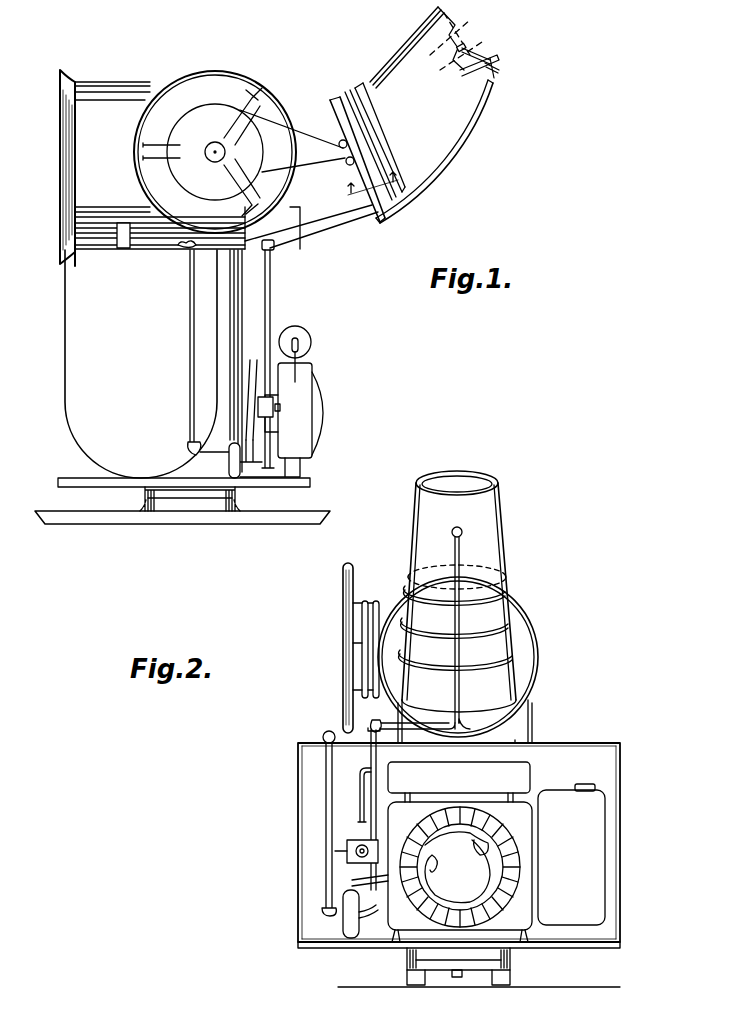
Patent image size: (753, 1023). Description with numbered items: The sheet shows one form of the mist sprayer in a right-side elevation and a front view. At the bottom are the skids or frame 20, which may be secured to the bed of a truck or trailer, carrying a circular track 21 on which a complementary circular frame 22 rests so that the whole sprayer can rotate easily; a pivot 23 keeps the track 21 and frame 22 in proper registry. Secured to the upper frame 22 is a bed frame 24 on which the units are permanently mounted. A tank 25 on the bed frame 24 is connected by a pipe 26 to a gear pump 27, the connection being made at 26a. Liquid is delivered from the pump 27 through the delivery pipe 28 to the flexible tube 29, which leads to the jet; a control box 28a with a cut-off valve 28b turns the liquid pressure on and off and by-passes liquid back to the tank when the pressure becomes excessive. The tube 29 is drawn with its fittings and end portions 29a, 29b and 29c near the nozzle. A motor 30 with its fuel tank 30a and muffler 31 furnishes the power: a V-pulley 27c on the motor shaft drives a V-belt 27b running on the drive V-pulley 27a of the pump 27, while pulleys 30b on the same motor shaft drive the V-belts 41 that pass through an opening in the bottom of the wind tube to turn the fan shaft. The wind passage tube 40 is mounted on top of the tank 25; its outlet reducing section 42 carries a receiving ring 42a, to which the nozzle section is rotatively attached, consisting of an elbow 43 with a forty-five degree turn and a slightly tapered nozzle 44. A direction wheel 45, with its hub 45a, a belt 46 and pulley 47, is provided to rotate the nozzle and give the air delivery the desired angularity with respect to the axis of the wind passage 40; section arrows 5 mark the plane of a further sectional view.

In FIG. 1, the skids or frame 20 is at (258, 514).
In FIG. 2, the skids or frame 20 is at (498, 986).
In FIG. 1, the circular track 21 is at (237, 498).
In FIG. 2, the circular track 21 is at (510, 964).
In FIG. 1, the complementary circular frame 22 is at (145, 493).
In FIG. 2, the complementary circular frame 22 is at (407, 958).
In FIG. 2, the pivot 23 is at (457, 978).
In FIG. 1, the bed frame 24 is at (58, 482).
In FIG. 1, the tank 25 is at (80, 406).
In FIG. 2, the tank 25 is at (606, 773).
In FIG. 2, the pipe 26 is at (325, 790).
In FIG. 2, the connection 26a is at (322, 910).
In FIG. 2, the gear pump 27 is at (343, 920).
In FIG. 1, the drive V-pulley 27a is at (245, 452).
In FIG. 2, the drive V-pulley 27a is at (352, 882).
In FIG. 1, the V-belt 27b is at (258, 430).
In FIG. 2, the V-belt 27b is at (362, 915).
In FIG. 1, the V-pulley 27c is at (248, 380).
In FIG. 1, the delivery pipe 28 is at (271, 300).
In FIG. 2, the delivery pipe 28 is at (378, 754).
In FIG. 1, the control box 28a is at (274, 405).
In FIG. 2, the control box 28a is at (378, 845).
In FIG. 1, the cut-off valve 28b is at (283, 408).
In FIG. 2, the cut-off valve 28b is at (360, 790).
In FIG. 1, the flexible tube 29 is at (452, 160).
In FIG. 2, the flexible tube 29 is at (460, 567).
In FIG. 1, the spring end 29a is at (497, 70).
In FIG. 2, the spring end 29a is at (452, 530).
In FIG. 1, the spring rod 29b is at (490, 60).
In FIG. 1, the spring anchor 29c is at (465, 47).
In FIG. 1, the motor 30 is at (300, 380).
In FIG. 2, the motor 30 is at (522, 843).
In FIG. 2, the fuel tank 30a is at (590, 855).
In FIG. 1, the pulleys 30b is at (228, 405).
In FIG. 2, the muffler 31 is at (518, 780).
In FIG. 1, the wind passage tube 40 is at (122, 90).
In FIG. 1, the driving V-belts 41 is at (236, 310).
In FIG. 1, the reducing section 42 is at (330, 100).
In FIG. 2, the reducing section 42 is at (512, 674).
In FIG. 1, the receiving ring 42a is at (345, 92).
In FIG. 1, the elbow 43 is at (418, 194).
In FIG. 2, the elbow 43 is at (528, 648).
In FIG. 1, the nozzle 44 is at (412, 32).
In FIG. 2, the nozzle 44 is at (505, 535).
In FIG. 1, the direction wheel 45 is at (245, 80).
In FIG. 2, the direction wheel 45 is at (350, 566).
In FIG. 2, the hub 45a is at (370, 600).
In FIG. 1, the belt 46 is at (318, 145).
In FIG. 1, the pulley 47 is at (343, 160).
In FIG. 1, the section line 5 is at (372, 192).